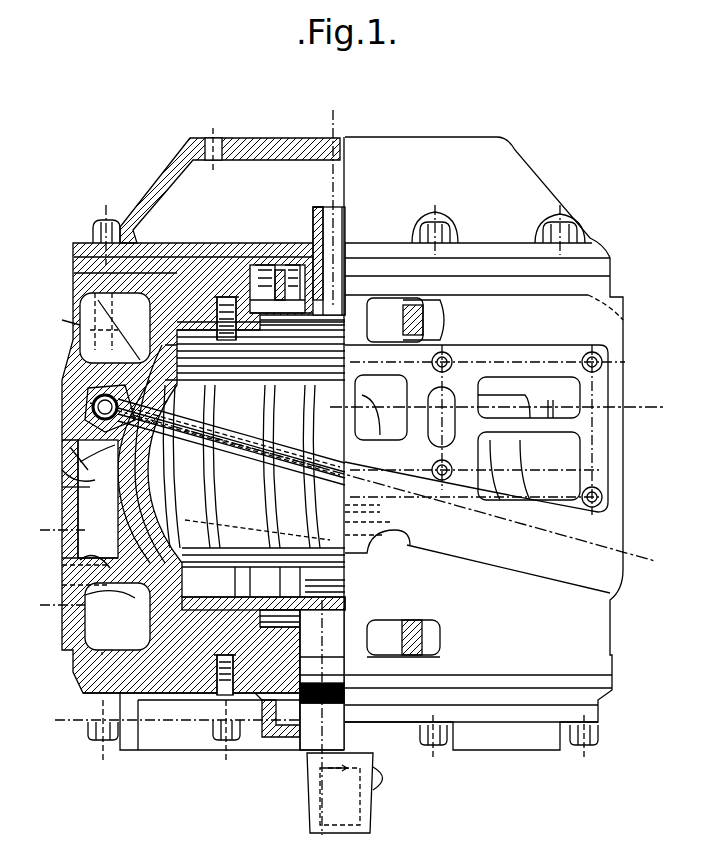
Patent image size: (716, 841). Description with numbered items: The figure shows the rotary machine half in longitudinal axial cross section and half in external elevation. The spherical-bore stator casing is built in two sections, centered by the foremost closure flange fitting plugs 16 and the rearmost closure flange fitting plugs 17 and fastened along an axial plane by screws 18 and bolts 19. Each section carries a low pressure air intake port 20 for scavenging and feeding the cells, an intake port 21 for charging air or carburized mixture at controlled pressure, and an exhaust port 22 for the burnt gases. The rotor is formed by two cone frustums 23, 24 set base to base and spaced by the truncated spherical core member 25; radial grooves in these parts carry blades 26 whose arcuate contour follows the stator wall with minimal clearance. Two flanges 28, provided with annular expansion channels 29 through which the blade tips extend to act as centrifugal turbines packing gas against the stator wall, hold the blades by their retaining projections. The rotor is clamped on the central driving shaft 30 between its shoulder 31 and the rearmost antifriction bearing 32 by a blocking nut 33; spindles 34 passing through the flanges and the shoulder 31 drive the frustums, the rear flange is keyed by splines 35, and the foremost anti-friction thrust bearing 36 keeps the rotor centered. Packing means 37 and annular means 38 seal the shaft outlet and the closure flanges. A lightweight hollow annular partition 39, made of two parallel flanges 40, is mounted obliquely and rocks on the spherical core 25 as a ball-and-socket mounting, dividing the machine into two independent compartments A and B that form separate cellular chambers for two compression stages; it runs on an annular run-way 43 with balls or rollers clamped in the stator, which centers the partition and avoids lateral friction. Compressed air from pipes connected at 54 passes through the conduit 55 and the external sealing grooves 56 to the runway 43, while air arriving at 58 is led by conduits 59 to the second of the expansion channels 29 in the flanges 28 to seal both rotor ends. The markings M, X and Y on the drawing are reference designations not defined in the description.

The foremost closure flange fitting plugs 16 is at (197, 681).
The rearmost closure flange fitting plugs 17 is at (187, 263).
The screws 18 is at (383, 527).
The bolts 19 is at (428, 642).
The low pressure air intake port 20 is at (527, 387).
The intake port 21 is at (397, 408).
The exhaust port 22 is at (570, 452).
The cone frustum 23 is at (240, 552).
The cone frustum 24 is at (227, 407).
The truncated spherical core member 25 is at (312, 500).
The blades 26 is at (210, 473).
The flanges 28 is at (207, 350).
The annular expansion channels 29 is at (130, 365).
The central driving shaft 30 is at (336, 217).
The shoulder 31 is at (310, 617).
The rearmost antifriction bearing 32 is at (325, 290).
The blocking nut 33 is at (305, 272).
The spindles 34 is at (280, 617).
The splines or driving keys 35 is at (313, 323).
The foremost anti-friction thrust bearing 36 is at (263, 700).
The packing means 37 is at (297, 740).
The annular means 38 is at (207, 655).
The movable annular partition 39 is at (345, 472).
The flanges 40 is at (237, 428).
The annular run-way 43 is at (93, 397).
The compressed air pipe connection 54 is at (68, 447).
The conduit 55 is at (115, 445).
The external sealing grooves 56 is at (77, 487).
The compressed air inlet 58 is at (90, 575).
The conduits 59 is at (100, 571).
The compartment A is at (281, 425).
The compartment B is at (222, 515).
The point M is at (80, 325).
The axis X is at (488, 407).
The axis Y is at (677, 407).